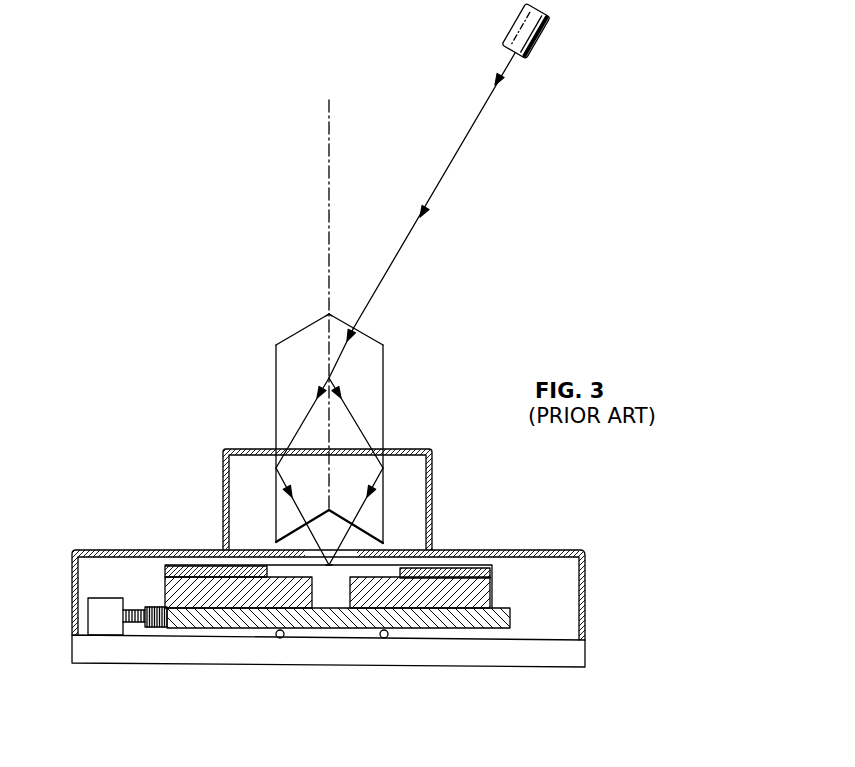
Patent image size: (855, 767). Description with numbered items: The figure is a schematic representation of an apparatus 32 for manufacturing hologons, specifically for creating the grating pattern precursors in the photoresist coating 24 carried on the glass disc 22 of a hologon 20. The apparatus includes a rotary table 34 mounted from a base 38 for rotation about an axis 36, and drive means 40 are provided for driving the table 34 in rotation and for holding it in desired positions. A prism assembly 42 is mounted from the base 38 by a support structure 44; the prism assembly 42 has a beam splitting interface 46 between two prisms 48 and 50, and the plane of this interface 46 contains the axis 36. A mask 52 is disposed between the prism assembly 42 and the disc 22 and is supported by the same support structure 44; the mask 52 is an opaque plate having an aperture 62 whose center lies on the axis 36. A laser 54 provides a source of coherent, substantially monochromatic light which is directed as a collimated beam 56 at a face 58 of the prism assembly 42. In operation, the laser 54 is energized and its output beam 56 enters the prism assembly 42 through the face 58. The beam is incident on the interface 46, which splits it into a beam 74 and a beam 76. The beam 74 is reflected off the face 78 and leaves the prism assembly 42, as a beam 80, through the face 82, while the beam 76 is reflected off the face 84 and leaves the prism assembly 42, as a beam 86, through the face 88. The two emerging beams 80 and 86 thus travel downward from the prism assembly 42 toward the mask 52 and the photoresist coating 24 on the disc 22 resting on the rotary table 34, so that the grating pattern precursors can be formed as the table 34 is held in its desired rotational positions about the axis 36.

The hologon 20 is at (128, 577).
The glass disc 22 is at (490, 592).
The coating 24 is at (205, 568).
The apparatus 32 is at (170, 345).
The rotary table 34 is at (205, 618).
The axis 36 is at (330, 118).
The base 38 is at (462, 651).
The drive means 40 is at (63, 605).
The prism assembly 42 is at (338, 407).
The support structure 44 is at (433, 510).
The beam splitting interface 46 is at (334, 318).
The prism 48 is at (279, 340).
The prism 50 is at (372, 378).
The mask 52 is at (412, 548).
The laser 54 is at (551, 20).
The collimated beam 56 is at (466, 142).
The face 58 is at (370, 336).
The aperture 62 is at (329, 552).
The beam 74 is at (310, 412).
The beam 76 is at (354, 432).
The face 78 is at (275, 372).
The beam 80 is at (310, 530).
The face 82 is at (313, 528).
The face 84 is at (383, 428).
The beam 86 is at (348, 533).
The face 88 is at (347, 528).